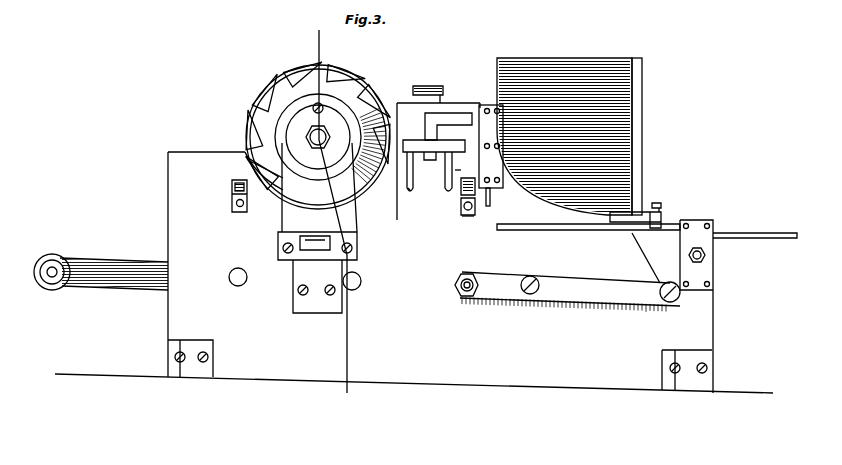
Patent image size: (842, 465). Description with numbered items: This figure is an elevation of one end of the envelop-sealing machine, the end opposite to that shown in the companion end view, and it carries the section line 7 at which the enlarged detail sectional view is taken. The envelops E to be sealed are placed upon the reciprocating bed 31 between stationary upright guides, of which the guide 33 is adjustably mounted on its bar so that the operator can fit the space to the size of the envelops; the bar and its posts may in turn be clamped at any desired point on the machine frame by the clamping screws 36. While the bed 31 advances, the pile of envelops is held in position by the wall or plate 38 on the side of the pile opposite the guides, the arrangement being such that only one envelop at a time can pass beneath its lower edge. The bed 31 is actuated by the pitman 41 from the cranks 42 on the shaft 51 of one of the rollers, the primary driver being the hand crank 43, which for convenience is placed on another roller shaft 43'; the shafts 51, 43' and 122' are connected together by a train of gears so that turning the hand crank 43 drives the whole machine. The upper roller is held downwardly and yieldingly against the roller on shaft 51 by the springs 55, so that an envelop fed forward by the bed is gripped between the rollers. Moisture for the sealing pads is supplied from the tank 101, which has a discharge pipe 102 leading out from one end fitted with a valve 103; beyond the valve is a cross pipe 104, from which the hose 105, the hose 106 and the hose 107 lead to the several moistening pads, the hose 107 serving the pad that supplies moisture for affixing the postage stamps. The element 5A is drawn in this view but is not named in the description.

The broken line 7 7 (section line) 7 is at (333, 33).
The reciprocating bed 31 is at (735, 235).
The upright guide 33 is at (640, 122).
The clamping screw 36 is at (660, 203).
The wall or plate 38 is at (488, 66).
The pitman 41 is at (625, 300).
The crank 42 is at (521, 295).
The hand crank 43 is at (101, 293).
The roller shaft 43' is at (236, 293).
The shaft 51 is at (462, 298).
The spring 55 is at (458, 174).
The stop member 5A is at (468, 218).
The tank 101 is at (447, 100).
The discharge pipe 102 is at (426, 140).
The valve 103 is at (440, 142).
The cross pipe 104 is at (409, 181).
The hose 105 is at (445, 180).
The hose 106 is at (470, 187).
The hose 107 is at (415, 195).
The shaft 122' is at (375, 298).
The envelop E is at (563, 58).